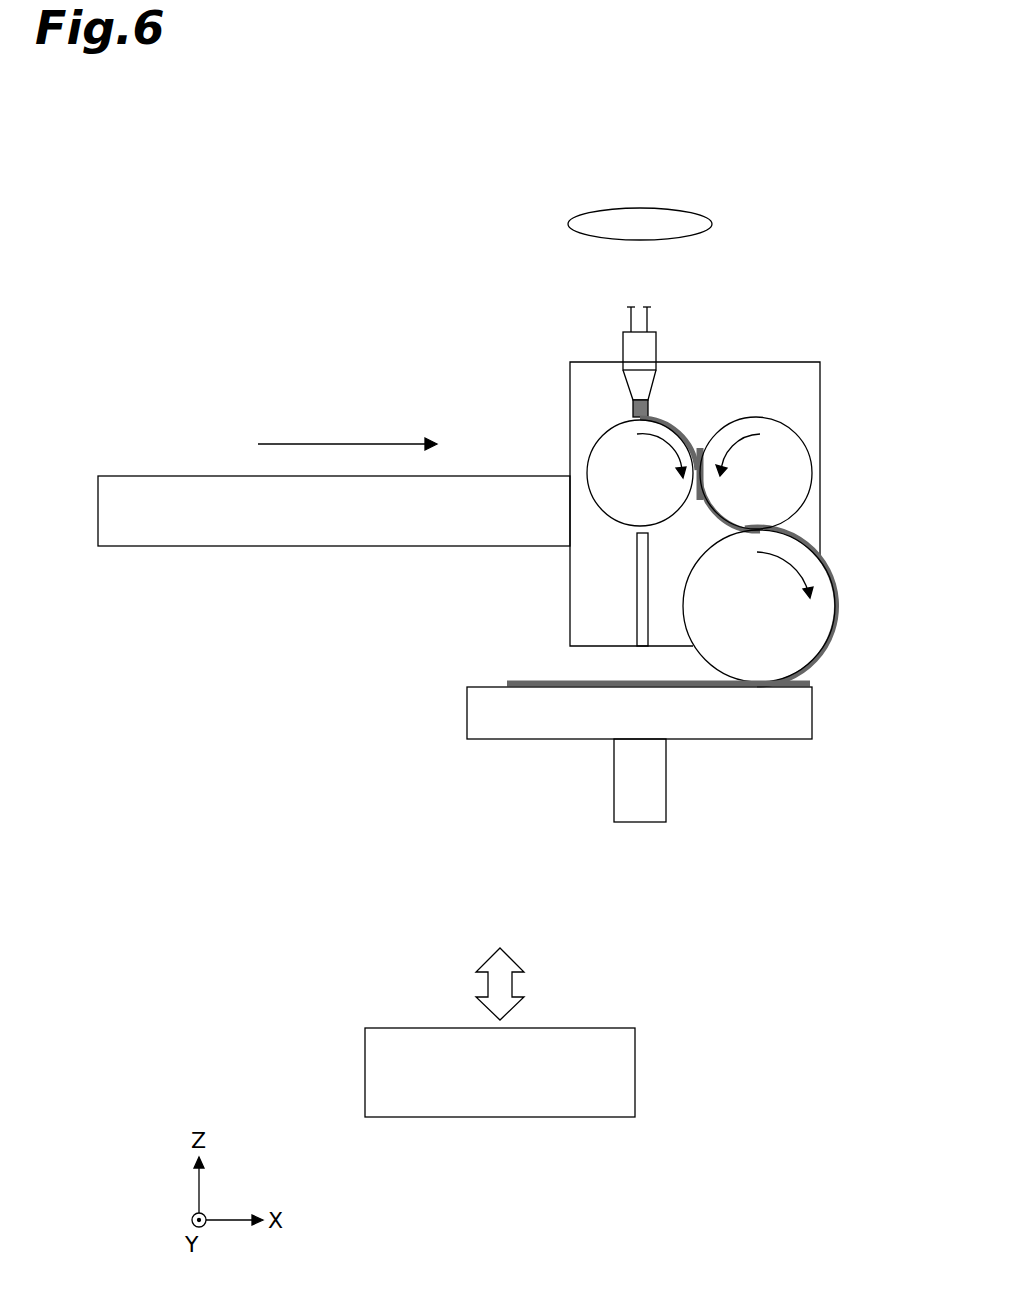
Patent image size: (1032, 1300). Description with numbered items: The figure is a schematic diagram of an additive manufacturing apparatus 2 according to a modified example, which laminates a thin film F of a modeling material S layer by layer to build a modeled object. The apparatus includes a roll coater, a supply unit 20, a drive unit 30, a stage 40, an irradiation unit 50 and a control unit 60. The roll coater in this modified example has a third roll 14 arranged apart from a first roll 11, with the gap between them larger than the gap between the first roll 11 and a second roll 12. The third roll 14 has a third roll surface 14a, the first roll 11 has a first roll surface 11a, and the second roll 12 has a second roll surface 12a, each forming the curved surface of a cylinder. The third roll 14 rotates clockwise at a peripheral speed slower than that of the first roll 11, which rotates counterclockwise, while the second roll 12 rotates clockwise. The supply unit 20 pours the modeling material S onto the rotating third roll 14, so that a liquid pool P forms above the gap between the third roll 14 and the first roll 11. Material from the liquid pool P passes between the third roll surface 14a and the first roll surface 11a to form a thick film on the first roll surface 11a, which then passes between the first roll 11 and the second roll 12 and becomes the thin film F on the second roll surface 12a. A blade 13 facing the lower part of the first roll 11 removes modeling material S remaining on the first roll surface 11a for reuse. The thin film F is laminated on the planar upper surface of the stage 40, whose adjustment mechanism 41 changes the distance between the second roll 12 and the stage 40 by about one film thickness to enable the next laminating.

The additive manufacturing apparatus 2 is at (114, 170).
The irradiation unit 50 is at (670, 208).
The supply unit 20 is at (623, 345).
The liquid pool P is at (707, 443).
The third roll 14 is at (583, 447).
The third roll surface 14a is at (600, 440).
The first roll 11 is at (779, 420).
The first roll surface 11a is at (770, 418).
The second roll 12 is at (799, 622).
The second roll surface 12a is at (832, 630).
The blade 13 is at (637, 573).
The drive unit 30 is at (178, 476).
The thin film F is at (528, 680).
The modeling material S is at (626, 647).
The stage 40 is at (467, 712).
The adjustment mechanism 41 is at (614, 784).
The control unit 60 is at (636, 1072).